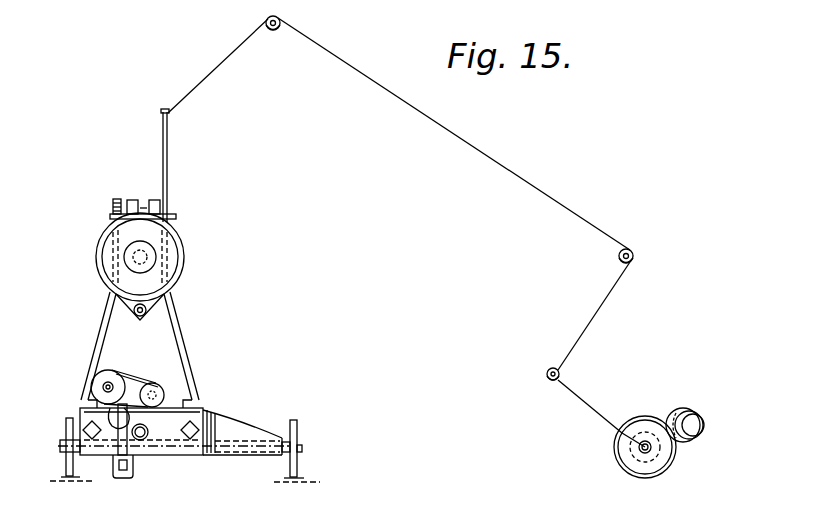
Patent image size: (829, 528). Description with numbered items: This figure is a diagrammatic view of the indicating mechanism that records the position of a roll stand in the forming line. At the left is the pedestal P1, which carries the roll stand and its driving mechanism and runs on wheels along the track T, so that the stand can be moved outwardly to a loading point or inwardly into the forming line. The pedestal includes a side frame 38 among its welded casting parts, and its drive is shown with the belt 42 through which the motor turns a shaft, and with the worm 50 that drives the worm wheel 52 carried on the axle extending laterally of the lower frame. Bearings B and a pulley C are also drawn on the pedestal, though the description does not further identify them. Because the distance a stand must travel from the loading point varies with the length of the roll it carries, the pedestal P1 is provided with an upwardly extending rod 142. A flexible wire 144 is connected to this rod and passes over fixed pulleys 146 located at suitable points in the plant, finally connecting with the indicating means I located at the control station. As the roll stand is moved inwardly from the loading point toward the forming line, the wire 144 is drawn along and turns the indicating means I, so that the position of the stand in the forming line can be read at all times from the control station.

The rod 142 is at (168, 162).
The flexible wire 144 is at (503, 163).
The fixed pulleys 146 is at (275, 31).
The pedestal P1 is at (183, 327).
The belt 42 is at (145, 370).
The worm 50 is at (142, 418).
The bearing B is at (88, 425).
The pulley C is at (144, 440).
The worm wheel 52 is at (124, 468).
The side frame 38 is at (244, 456).
The track T is at (68, 480).
The indicating means I is at (615, 466).